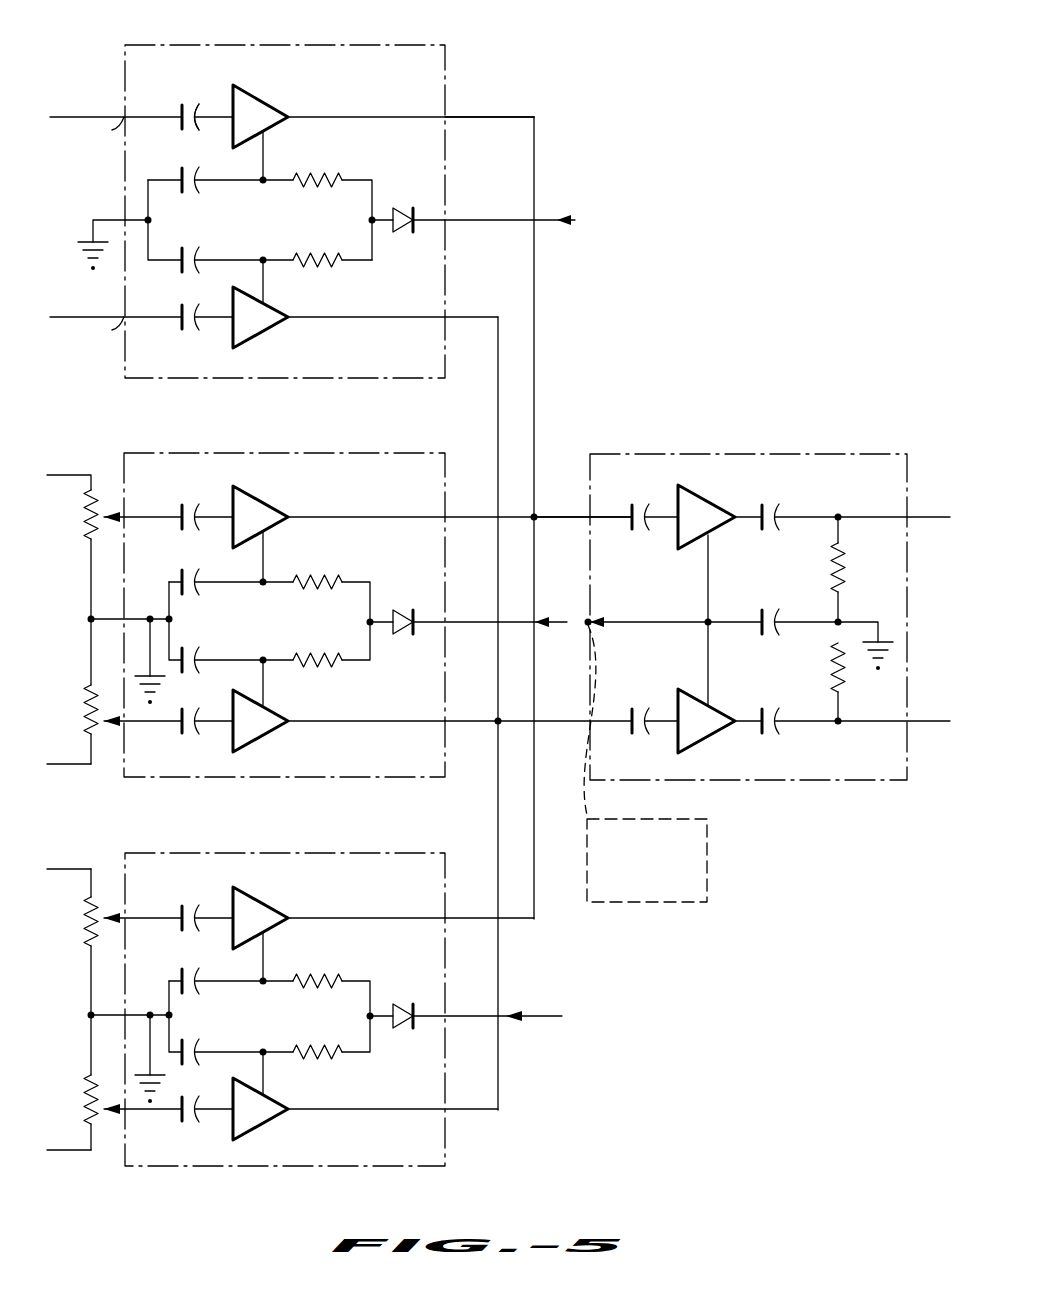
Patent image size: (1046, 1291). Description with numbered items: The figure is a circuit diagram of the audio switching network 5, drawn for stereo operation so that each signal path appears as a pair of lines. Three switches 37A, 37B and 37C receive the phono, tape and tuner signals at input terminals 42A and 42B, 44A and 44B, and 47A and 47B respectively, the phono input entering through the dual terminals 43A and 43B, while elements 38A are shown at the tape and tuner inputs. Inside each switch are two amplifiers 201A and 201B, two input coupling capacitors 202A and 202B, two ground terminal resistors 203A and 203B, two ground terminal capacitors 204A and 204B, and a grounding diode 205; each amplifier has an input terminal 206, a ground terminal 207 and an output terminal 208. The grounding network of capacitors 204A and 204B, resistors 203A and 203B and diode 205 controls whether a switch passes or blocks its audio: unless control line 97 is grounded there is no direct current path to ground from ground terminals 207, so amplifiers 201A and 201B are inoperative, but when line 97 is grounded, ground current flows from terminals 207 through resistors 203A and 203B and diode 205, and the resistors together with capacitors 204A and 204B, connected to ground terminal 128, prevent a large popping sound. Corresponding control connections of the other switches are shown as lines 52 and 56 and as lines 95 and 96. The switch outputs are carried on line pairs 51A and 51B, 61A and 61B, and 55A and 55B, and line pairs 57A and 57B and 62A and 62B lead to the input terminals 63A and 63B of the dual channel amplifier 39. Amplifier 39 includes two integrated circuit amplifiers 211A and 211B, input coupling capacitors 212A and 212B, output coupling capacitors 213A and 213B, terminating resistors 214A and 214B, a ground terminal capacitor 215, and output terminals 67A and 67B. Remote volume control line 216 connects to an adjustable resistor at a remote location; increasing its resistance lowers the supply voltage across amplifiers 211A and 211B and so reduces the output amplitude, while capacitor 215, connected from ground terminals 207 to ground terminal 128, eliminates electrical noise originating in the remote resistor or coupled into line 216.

The audio switching network 5 is at (672, 186).
The switch 37A is at (405, 45).
The switch 37B is at (385, 453).
The switch 37C is at (385, 853).
The dual channel amplifier 39 is at (748, 605).
The input terminal 42A is at (80, 117).
The input terminal 42B is at (78, 309).
The input terminal 43A is at (101, 130).
The input terminal 43B is at (101, 332).
The input terminal 44A is at (72, 475).
The input terminal 44B is at (68, 764).
The input terminal 47A is at (68, 869).
The input terminal 47B is at (66, 1150).
The level potentiometer 38A is at (84, 524).
The signal line 51A is at (445, 117).
The signal line 51B is at (445, 317).
The phono select control line 52 is at (446, 225).
The signal line 55A is at (445, 918).
The signal line 55B is at (445, 1109).
The tuner select control line 56 is at (445, 1016).
The signal line 57A is at (534, 408).
The signal line 57B is at (498, 408).
The signal line 61A is at (535, 517).
The signal line 61B is at (498, 722).
The signal line 62A is at (563, 514).
The signal line 62B is at (565, 722).
The input terminal 63A is at (592, 518).
The input terminal 63B is at (586, 723).
The output terminal 67A is at (928, 516).
The output terminal 67B is at (928, 710).
The tuner select signal 95 is at (534, 1012).
The tape select signal 96 is at (558, 621).
The control line 97 is at (554, 225).
The ground terminal 128 is at (80, 242).
The amplifier 201A is at (269, 100).
The amplifier 201B is at (262, 338).
The input coupling capacitor 202A is at (177, 111).
The input coupling capacitor 202B is at (177, 320).
The ground terminal resistor 203A is at (338, 178).
The ground terminal resistor 203B is at (340, 244).
The ground terminal capacitor 204A is at (174, 180).
The ground terminal capacitor 204B is at (182, 256).
The grounding diode 205 is at (420, 214).
The input terminal 206 is at (214, 112).
The ground terminal 207 is at (268, 140).
The output terminal 208 is at (288, 117).
The integrated circuit amplifier 211A is at (693, 494).
The integrated circuit amplifier 211B is at (712, 736).
The input coupling capacitor 212A is at (645, 505).
The input coupling capacitor 212B is at (632, 728).
The output coupling capacitor 213A is at (842, 505).
The output coupling capacitor 213B is at (790, 736).
The terminating resistor 214A is at (850, 572).
The terminating resistor 214B is at (842, 666).
The ground terminal capacitor 215 is at (758, 620).
The remote volume control line 216 is at (591, 620).